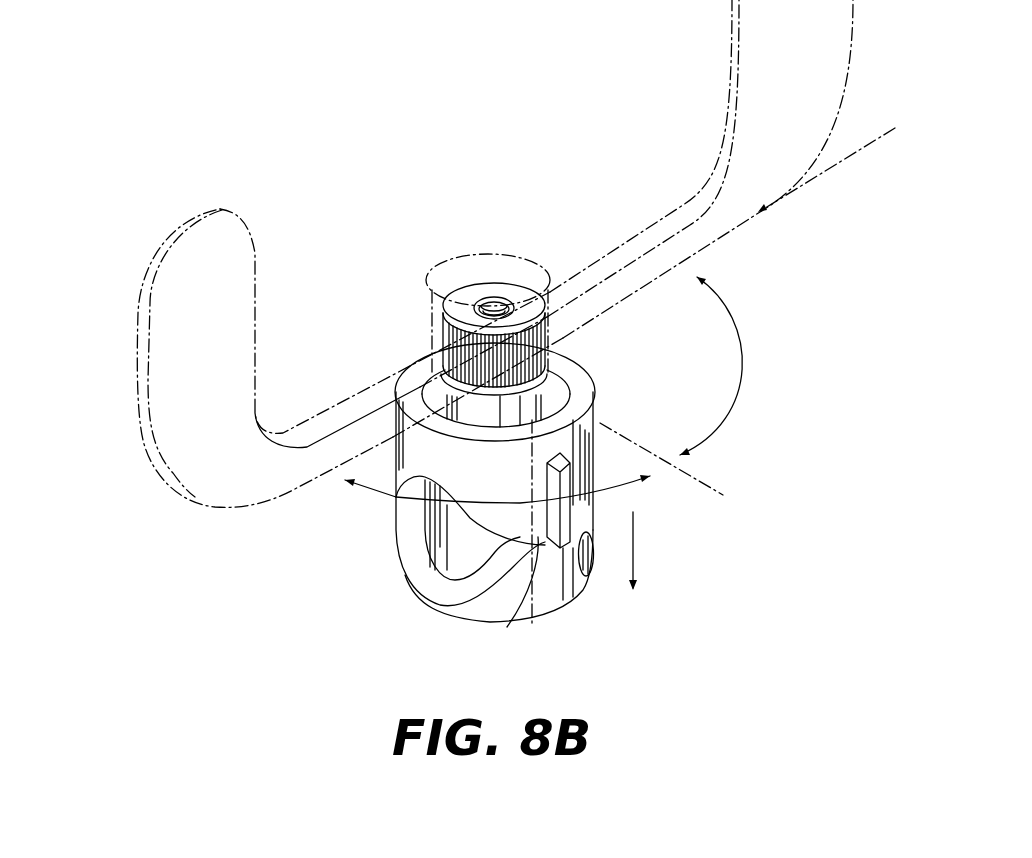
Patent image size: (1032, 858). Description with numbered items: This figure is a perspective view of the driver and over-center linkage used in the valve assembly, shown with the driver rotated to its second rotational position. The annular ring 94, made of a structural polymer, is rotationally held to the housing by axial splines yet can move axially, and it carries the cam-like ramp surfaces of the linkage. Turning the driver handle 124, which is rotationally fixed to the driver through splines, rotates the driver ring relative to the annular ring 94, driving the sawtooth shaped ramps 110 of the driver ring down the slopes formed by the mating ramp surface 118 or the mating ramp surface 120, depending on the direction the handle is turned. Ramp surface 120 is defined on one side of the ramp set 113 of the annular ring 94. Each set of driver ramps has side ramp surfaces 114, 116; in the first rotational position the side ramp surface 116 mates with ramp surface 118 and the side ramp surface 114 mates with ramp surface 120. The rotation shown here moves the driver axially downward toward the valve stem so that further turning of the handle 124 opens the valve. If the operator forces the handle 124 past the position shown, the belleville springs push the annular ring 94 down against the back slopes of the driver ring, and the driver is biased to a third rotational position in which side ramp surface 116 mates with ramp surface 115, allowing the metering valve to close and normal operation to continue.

The annular ring 94 is at (593, 382).
The sawtooth shaped ramps 110 is at (550, 577).
The ramp set 113 is at (520, 538).
The side ramp surface 114 is at (580, 583).
The ramp surface 115 is at (592, 500).
The side ramp surface 116 is at (470, 592).
The mating ramp surface 118 is at (407, 497).
The mating ramp surface 120 is at (402, 546).
The driver handle 124 is at (158, 370).